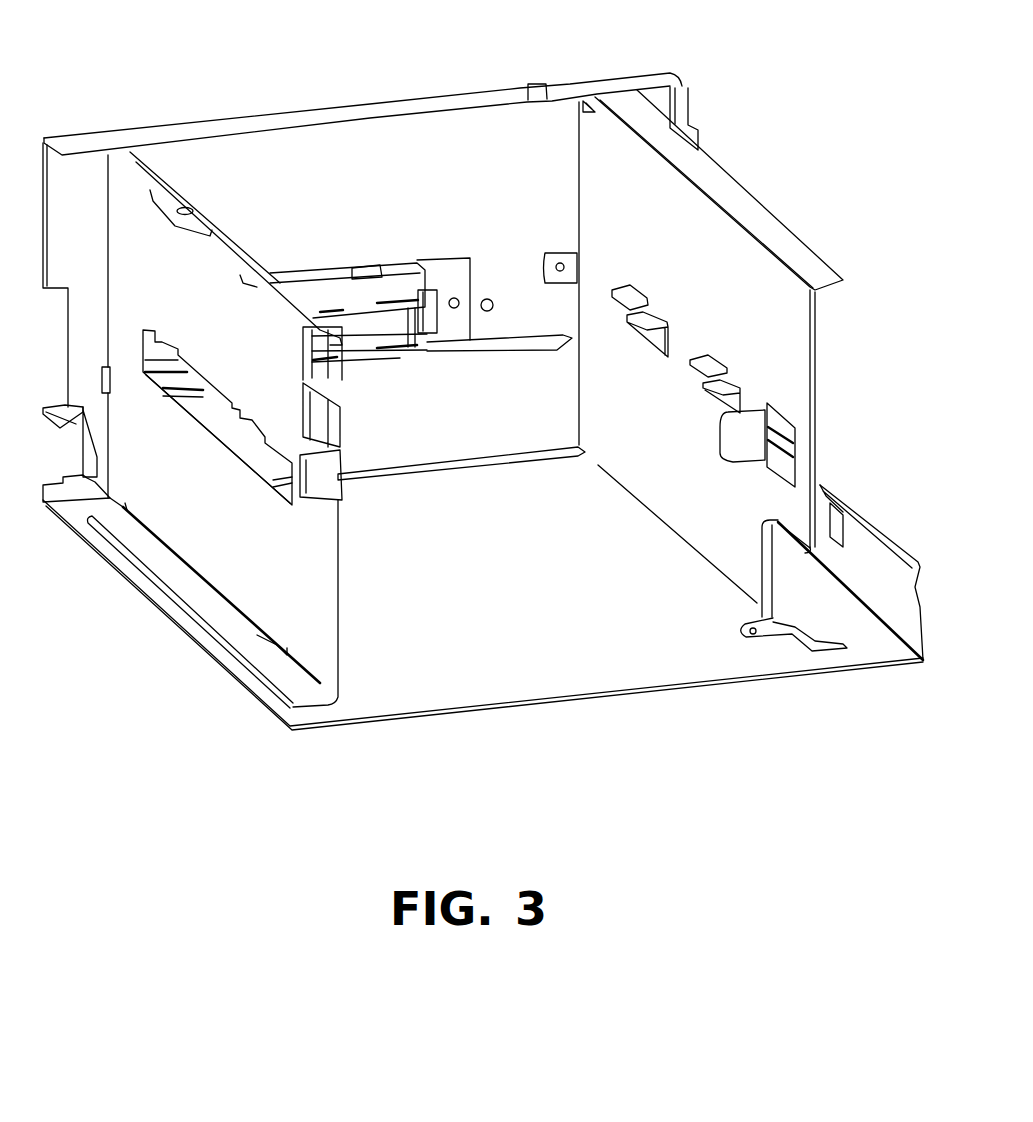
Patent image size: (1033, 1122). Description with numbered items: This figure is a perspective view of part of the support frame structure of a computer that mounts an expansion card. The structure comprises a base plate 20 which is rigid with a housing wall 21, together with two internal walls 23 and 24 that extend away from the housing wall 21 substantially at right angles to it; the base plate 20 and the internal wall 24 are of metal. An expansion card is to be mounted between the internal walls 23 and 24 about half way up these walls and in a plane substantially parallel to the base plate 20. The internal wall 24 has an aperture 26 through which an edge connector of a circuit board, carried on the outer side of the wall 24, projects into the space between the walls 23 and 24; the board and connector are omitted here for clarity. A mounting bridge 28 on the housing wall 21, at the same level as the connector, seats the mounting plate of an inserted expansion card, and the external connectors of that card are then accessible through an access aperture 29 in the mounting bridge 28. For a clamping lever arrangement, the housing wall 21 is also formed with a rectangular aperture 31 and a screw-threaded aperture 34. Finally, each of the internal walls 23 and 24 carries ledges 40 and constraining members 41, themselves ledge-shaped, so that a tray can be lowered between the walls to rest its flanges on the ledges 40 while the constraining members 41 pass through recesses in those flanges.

The base plate 20 is at (585, 684).
The housing wall 21 is at (481, 92).
The internal wall 23 is at (793, 358).
The internal wall 24 is at (330, 592).
The aperture 26 is at (203, 422).
The mounting bridge 28 is at (345, 288).
The access aperture 29 is at (362, 336).
The rectangular aperture 31 is at (437, 323).
The screw-threaded aperture 34 is at (460, 300).
The ledge 40 is at (643, 318).
The constraining member 41 is at (622, 290).